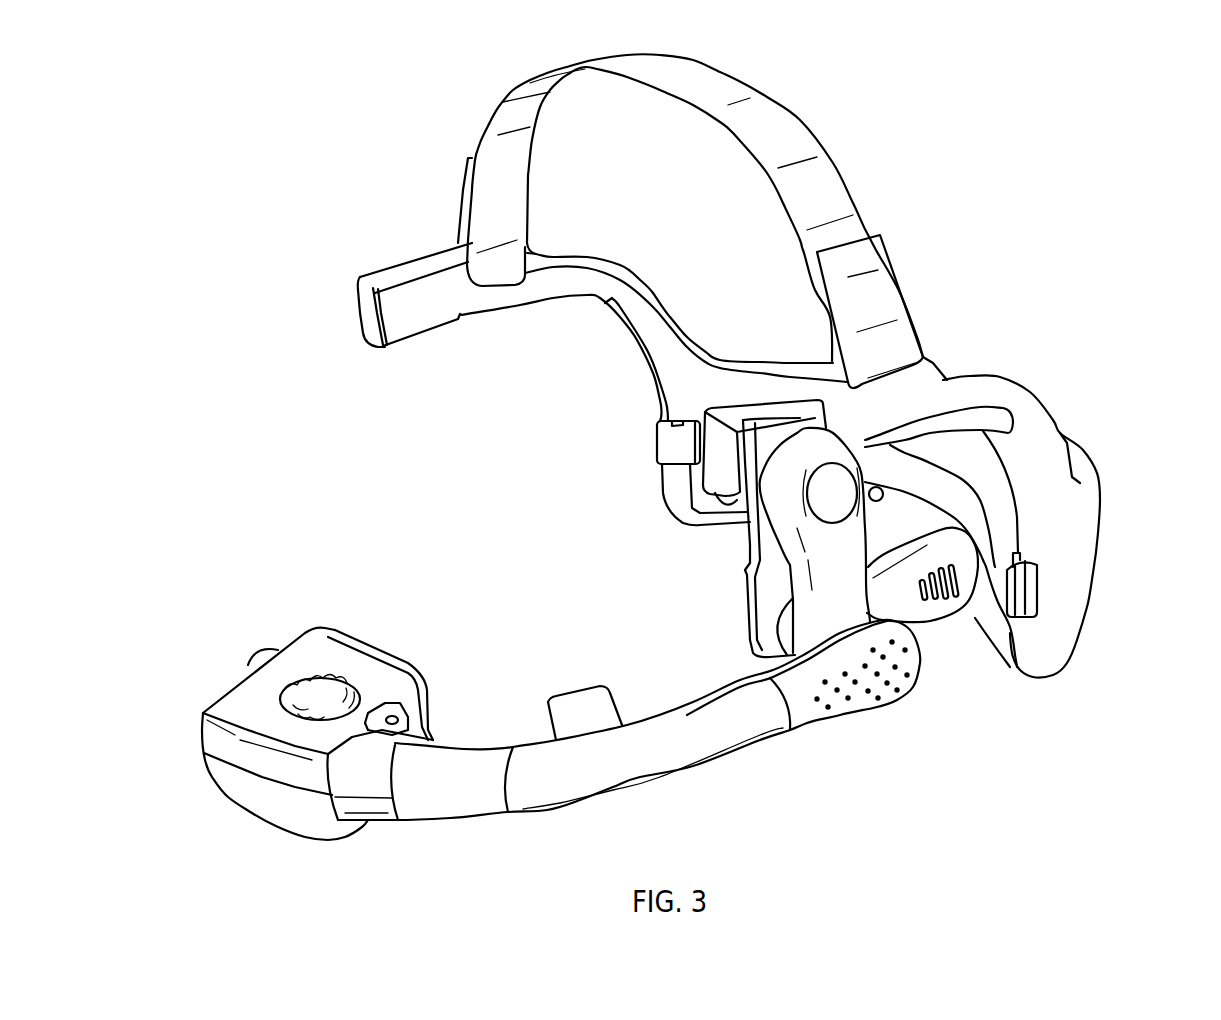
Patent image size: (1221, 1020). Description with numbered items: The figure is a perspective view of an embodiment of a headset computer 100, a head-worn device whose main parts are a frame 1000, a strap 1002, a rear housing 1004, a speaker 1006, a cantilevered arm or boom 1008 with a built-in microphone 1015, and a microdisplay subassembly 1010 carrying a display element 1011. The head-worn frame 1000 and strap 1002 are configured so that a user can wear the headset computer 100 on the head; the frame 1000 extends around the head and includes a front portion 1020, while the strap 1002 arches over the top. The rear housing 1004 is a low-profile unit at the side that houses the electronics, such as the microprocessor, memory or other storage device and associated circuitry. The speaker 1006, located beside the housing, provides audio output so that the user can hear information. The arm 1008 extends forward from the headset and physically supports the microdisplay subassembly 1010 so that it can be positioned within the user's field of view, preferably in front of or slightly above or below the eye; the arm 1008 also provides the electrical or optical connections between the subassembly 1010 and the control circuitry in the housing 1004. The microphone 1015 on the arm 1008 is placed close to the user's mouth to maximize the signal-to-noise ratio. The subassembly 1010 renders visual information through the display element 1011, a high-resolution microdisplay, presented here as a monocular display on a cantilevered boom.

The headset computer 100 is at (333, 100).
The strap 1002 is at (807, 128).
The frame 1000 is at (413, 343).
The front pad of headband 1020 is at (363, 313).
The rear housing 1004 is at (1097, 537).
The speaker 1006 is at (937, 620).
The arm 1008 is at (685, 770).
The microdisplay subassembly 1010 is at (228, 709).
The display element 1011 is at (345, 633).
The microphone 1015 is at (565, 698).